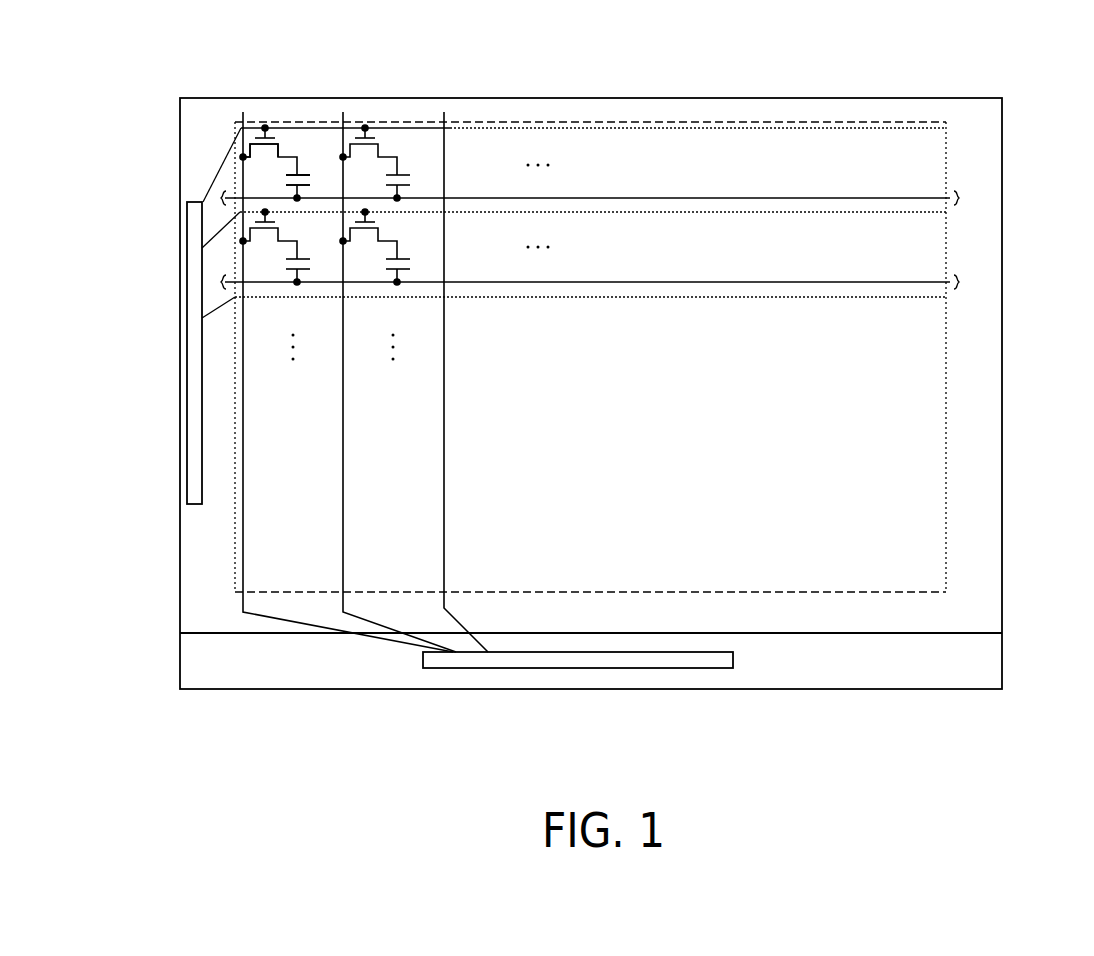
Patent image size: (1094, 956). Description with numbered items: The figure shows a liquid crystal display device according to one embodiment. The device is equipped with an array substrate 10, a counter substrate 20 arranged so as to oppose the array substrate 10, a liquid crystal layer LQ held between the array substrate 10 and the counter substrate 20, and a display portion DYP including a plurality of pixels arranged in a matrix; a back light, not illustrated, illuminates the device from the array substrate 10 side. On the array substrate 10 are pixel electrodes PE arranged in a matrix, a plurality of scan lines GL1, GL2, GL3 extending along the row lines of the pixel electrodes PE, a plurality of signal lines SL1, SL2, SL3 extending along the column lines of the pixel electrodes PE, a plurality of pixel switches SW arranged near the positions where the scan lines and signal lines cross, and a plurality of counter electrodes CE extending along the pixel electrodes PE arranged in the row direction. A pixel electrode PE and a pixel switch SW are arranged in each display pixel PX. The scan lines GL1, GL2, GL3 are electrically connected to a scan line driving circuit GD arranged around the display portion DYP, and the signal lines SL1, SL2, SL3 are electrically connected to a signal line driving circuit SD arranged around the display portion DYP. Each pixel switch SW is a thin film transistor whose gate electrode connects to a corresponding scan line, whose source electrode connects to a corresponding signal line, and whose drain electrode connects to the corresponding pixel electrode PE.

The array substrate 10 is at (943, 689).
The counter substrate 20 is at (988, 602).
The display portion DYP is at (946, 162).
The scan line driving circuit GD is at (180, 445).
The scan line GL1 is at (603, 128).
The scan line GL2 is at (603, 212).
The scan line GL3 is at (603, 297).
The counter electrode CE is at (808, 198).
The signal line SL1 is at (245, 455).
The signal line SL2 is at (346, 455).
The signal line SL3 is at (446, 455).
The signal line driving circuit SD is at (530, 668).
The display pixel PX is at (285, 148).
The pixel switch SW is at (255, 138).
The liquid crystal layer LQ is at (287, 176).
The pixel electrode PE is at (322, 160).